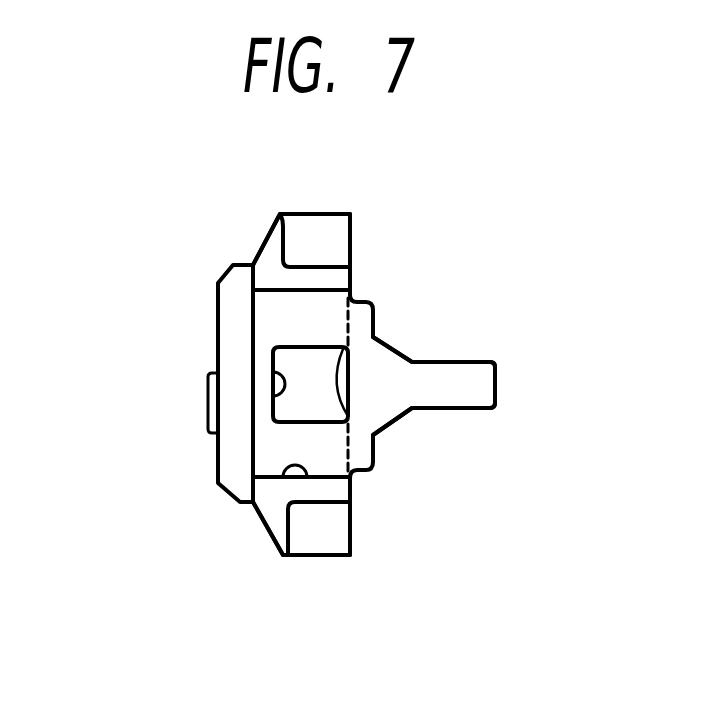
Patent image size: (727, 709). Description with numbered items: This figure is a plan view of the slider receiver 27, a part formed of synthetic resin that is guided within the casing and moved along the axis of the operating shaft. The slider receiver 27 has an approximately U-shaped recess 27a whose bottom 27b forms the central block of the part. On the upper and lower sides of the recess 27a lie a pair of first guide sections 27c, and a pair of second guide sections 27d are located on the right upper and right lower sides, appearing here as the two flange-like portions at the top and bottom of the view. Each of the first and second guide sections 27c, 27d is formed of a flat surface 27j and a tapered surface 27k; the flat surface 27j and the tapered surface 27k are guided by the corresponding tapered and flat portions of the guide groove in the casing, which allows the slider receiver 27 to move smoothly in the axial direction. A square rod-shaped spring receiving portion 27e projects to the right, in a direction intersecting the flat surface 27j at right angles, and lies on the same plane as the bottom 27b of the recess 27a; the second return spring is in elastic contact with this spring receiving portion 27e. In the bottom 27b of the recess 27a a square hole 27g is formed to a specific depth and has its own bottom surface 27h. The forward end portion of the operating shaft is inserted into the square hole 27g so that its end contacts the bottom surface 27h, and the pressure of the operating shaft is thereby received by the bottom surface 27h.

The slider receiver 27 is at (170, 347).
The recess 27a is at (283, 480).
The bottom 27b is at (280, 322).
The first guide section 27c is at (381, 384).
The second guide section 27d is at (348, 600).
The spring receiving portion 27e is at (480, 375).
The square hole 27g is at (288, 393).
The bottom surface 27h is at (318, 358).
The flat surface 27j is at (360, 238).
The tapered surface 27k is at (267, 238).